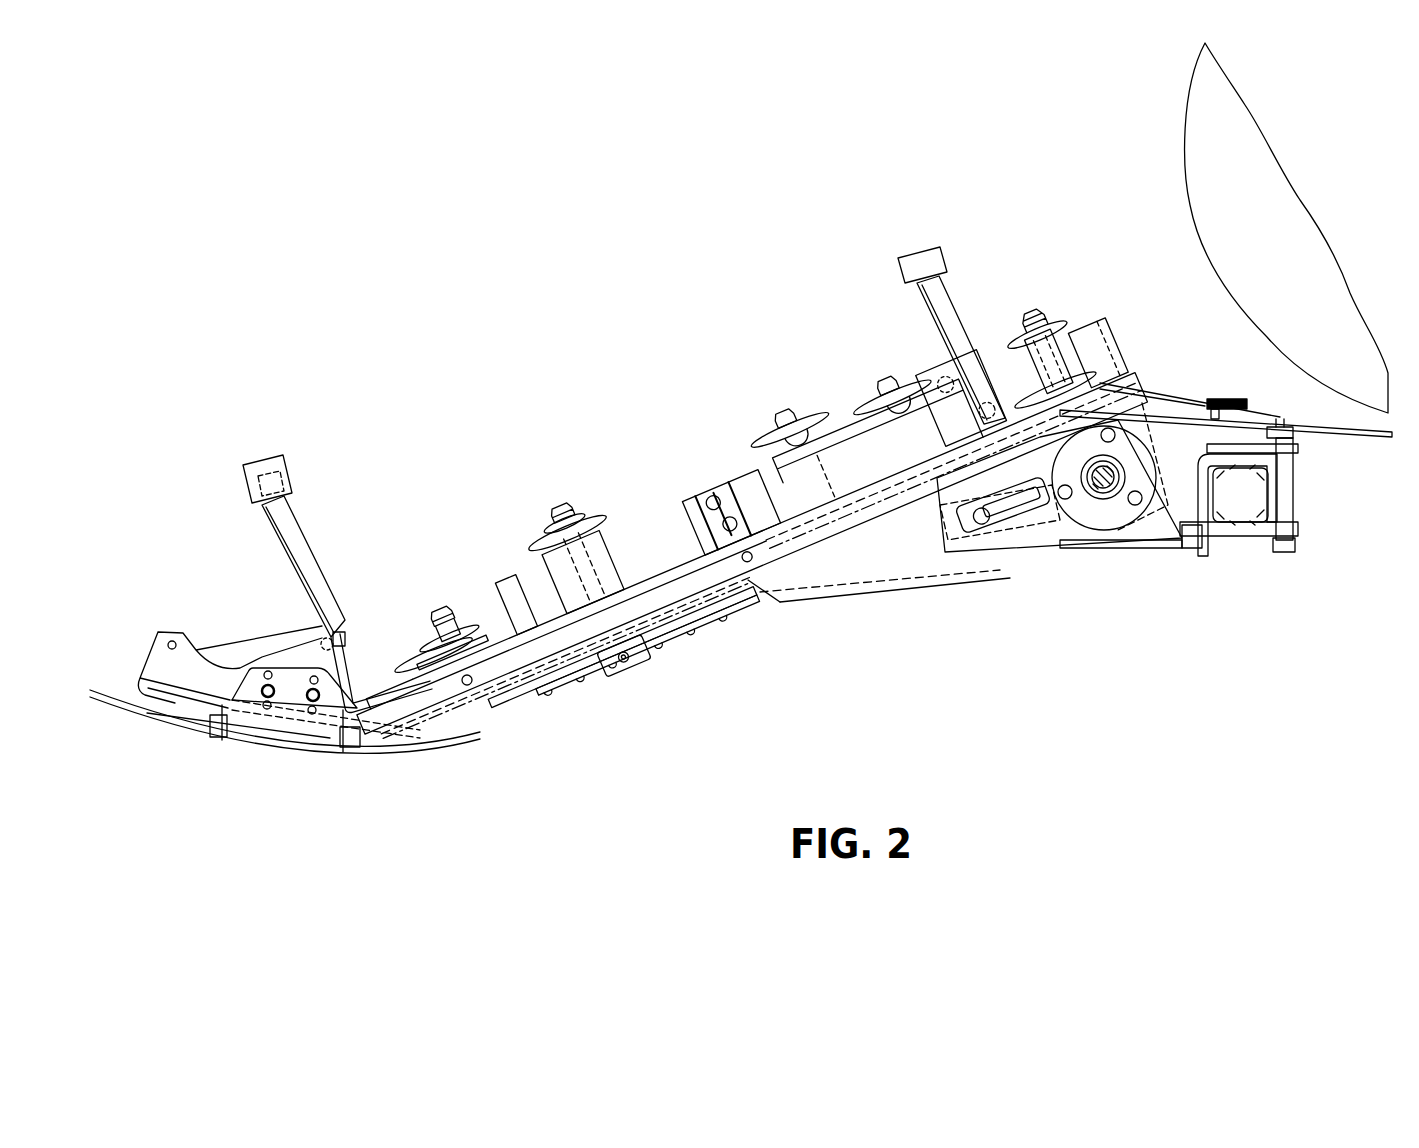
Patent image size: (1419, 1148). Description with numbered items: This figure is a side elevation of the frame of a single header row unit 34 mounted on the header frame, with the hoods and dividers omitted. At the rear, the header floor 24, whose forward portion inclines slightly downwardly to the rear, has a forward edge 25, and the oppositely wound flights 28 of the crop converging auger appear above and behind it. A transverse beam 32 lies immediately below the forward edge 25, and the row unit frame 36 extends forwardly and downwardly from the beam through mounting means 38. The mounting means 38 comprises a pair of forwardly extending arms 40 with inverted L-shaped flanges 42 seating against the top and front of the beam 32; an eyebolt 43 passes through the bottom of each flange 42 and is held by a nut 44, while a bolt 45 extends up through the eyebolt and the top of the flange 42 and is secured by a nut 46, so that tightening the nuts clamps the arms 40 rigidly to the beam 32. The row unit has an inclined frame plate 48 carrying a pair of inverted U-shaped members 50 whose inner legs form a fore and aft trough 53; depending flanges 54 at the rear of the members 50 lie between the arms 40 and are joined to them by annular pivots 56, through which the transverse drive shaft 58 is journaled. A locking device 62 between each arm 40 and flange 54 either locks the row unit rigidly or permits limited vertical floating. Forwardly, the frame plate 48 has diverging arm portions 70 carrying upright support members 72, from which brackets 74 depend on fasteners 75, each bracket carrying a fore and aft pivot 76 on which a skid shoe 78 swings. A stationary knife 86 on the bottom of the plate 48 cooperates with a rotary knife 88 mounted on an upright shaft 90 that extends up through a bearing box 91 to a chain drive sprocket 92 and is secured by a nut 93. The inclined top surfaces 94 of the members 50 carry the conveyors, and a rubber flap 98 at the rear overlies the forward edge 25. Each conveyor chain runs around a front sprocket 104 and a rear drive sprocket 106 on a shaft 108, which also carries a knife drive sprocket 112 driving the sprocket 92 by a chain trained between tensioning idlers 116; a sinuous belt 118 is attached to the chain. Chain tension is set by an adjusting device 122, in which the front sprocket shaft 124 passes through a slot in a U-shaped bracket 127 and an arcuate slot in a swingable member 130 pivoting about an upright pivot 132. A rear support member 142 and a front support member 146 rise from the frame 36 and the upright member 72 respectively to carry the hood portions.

The floor 24 is at (1343, 428).
The forward edge 25 is at (1205, 400).
The flights 28 is at (1205, 236).
The transverse beam 32 is at (1237, 527).
The row unit 34 is at (946, 600).
The row unit frame 36 is at (762, 608).
The mounting means 38 is at (1155, 553).
The arms 40 is at (1120, 538).
The inverted L-shaped flange 42 is at (1208, 457).
The eyebolt 43 is at (1267, 537).
The nut 44 is at (1195, 548).
The bolt 45 is at (1290, 492).
The nut 46 is at (1283, 427).
The frame plate 48 is at (430, 703).
The inverted U-shaped members 50 is at (680, 560).
The trough 53 is at (845, 497).
The depending flanges 54 is at (822, 600).
The annular pivots 56 is at (1100, 497).
The transverse drive shaft 58 is at (1118, 470).
The locking device 62 is at (1028, 543).
The forwardly diverging arm portions 70 is at (212, 730).
The upright support members 72 is at (348, 661).
The brackets 74 is at (290, 670).
The fasteners 75 is at (272, 700).
The fore and aft pivot 76 is at (318, 702).
The skid shoe 78 is at (340, 748).
The stationary knife 86 is at (535, 690).
The rotary knife 88 is at (490, 708).
The upright shaft 90 is at (597, 560).
The bearing box 91 is at (550, 575).
The chain drive sprocket 92 is at (588, 520).
The nut 93 is at (577, 503).
The inclined surfaces 94 is at (930, 462).
The rubber flap 98 is at (1178, 395).
The front sprocket 104 is at (420, 652).
The rear sprocket 106 is at (1044, 343).
The shaft 108 is at (1022, 316).
The knife drive sprocket 112 is at (1055, 318).
The tensioning idlers 116 is at (870, 405).
The sinuous belt 118 is at (1108, 329).
The adjusting device 122 is at (452, 609).
The shaft 124 is at (448, 614).
The U-shaped bracket 127 is at (492, 686).
The swingable member 130 is at (420, 676).
The upright pivot 132 is at (515, 604).
The rear support member 142 is at (950, 282).
The front support member 146 is at (312, 540).